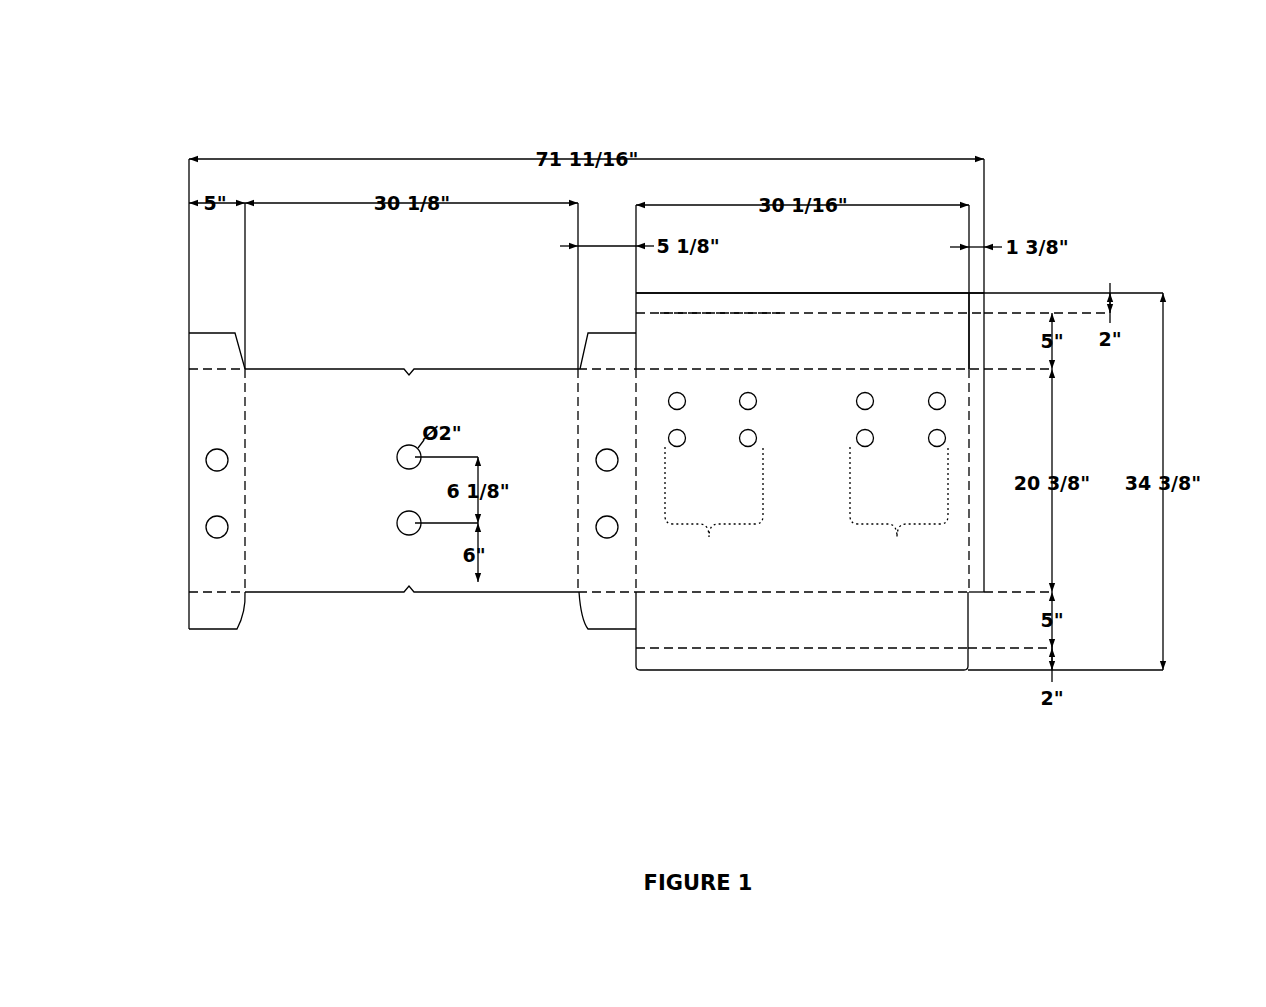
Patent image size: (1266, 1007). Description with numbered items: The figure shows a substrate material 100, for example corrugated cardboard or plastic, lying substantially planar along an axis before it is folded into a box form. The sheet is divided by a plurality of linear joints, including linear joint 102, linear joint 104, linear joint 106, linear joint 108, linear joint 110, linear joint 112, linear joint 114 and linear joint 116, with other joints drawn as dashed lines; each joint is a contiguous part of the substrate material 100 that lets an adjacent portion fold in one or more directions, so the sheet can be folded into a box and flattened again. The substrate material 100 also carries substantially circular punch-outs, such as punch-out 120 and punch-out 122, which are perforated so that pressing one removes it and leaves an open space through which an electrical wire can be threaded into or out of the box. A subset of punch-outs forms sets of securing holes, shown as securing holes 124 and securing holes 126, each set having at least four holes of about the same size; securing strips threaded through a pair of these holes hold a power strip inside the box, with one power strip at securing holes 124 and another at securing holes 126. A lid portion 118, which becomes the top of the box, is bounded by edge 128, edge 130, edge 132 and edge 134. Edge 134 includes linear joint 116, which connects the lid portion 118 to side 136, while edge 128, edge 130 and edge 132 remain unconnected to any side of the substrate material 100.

The substrate material 100 is at (1072, 91).
The linear joint 102 is at (212, 596).
The linear joint 104 is at (247, 567).
The linear joint 106 is at (228, 380).
The linear joint 108 is at (582, 563).
The linear joint 110 is at (599, 597).
The linear joint 112 is at (631, 562).
The linear joint 114 is at (715, 313).
The linear joint 116 is at (783, 369).
The lid portion 118 is at (908, 347).
The punch-out 120 is at (416, 446).
The punch-out 122 is at (408, 535).
The securing holes 124 is at (709, 537).
The securing holes 126 is at (897, 537).
The edge 128 is at (632, 332).
The edge 130 is at (951, 292).
The edge 132 is at (970, 345).
The edge 134 is at (907, 372).
The side 136 is at (809, 513).